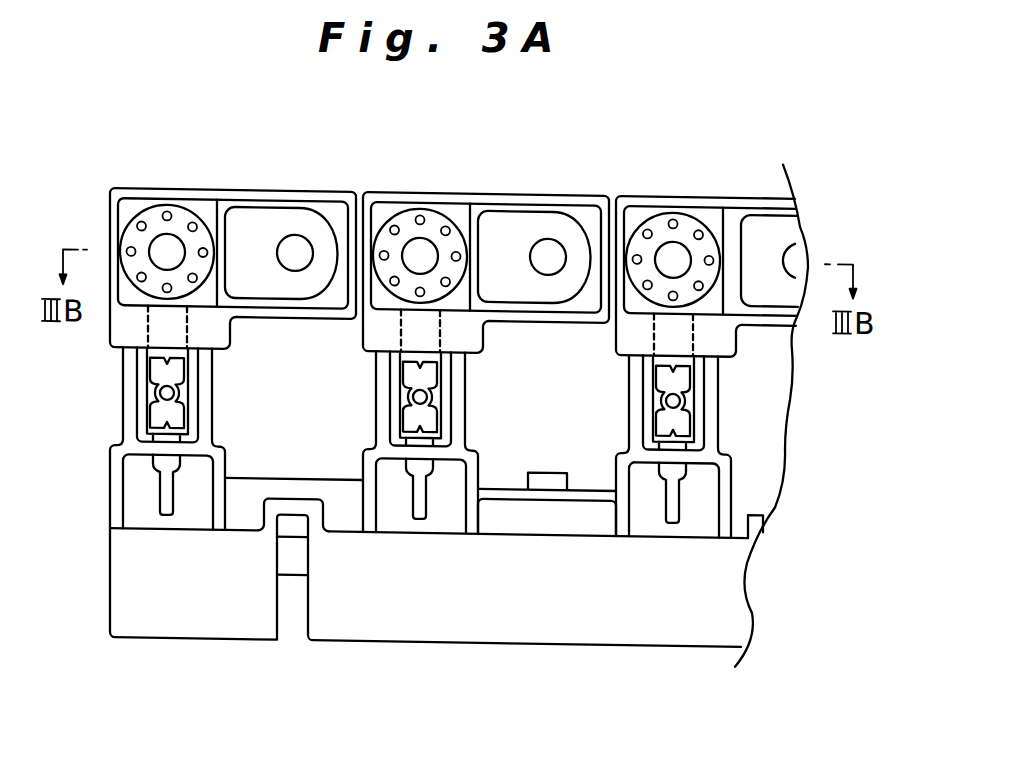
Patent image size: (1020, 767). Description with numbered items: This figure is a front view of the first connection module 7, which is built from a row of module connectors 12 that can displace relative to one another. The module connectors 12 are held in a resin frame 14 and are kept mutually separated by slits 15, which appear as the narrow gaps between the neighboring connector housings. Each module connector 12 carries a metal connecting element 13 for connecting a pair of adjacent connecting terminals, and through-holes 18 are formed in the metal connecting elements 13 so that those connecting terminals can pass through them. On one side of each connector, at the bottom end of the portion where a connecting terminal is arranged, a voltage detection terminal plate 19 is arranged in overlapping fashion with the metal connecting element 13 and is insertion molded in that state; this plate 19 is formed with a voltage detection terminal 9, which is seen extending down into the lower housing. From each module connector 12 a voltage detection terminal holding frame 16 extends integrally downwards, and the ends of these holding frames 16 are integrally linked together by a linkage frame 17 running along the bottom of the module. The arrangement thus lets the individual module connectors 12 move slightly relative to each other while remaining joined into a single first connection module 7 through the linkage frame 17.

The first connection module 7 is at (783, 152).
The voltage detection terminal 9 is at (163, 465).
The module connector 12 is at (161, 184).
The metal connecting element 13 is at (256, 226).
The resin frame 14 is at (115, 218).
The slit 15 is at (358, 186).
The voltage detection terminal holding frame 16 is at (207, 396).
The linkage frame 17 is at (242, 517).
The through-hole 18 is at (172, 256).
The voltage detection terminal plate 19 is at (137, 263).